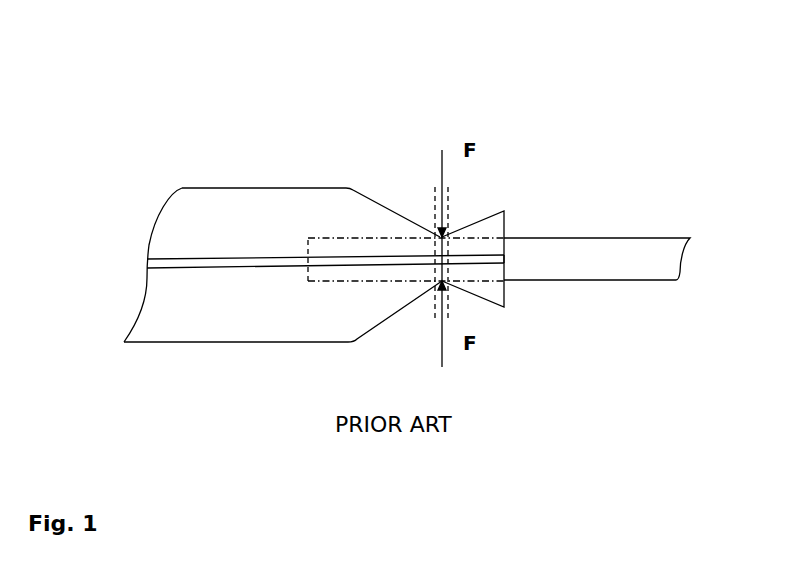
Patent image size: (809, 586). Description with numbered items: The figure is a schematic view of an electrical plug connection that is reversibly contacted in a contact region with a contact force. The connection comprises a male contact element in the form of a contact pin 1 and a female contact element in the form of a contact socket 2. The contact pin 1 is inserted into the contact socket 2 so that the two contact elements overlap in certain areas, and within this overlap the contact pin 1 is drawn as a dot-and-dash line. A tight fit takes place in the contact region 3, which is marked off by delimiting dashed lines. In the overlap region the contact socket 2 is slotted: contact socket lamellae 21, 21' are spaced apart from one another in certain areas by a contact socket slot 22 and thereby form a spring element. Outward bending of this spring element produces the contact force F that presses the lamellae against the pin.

The contact pin 1 is at (570, 262).
The contact socket 2 is at (150, 177).
The contact socket lamella 21 is at (236, 381).
The contact socket lamella 21' is at (264, 146).
The contact socket slot 22 is at (275, 263).
The contact region 3 is at (440, 235).